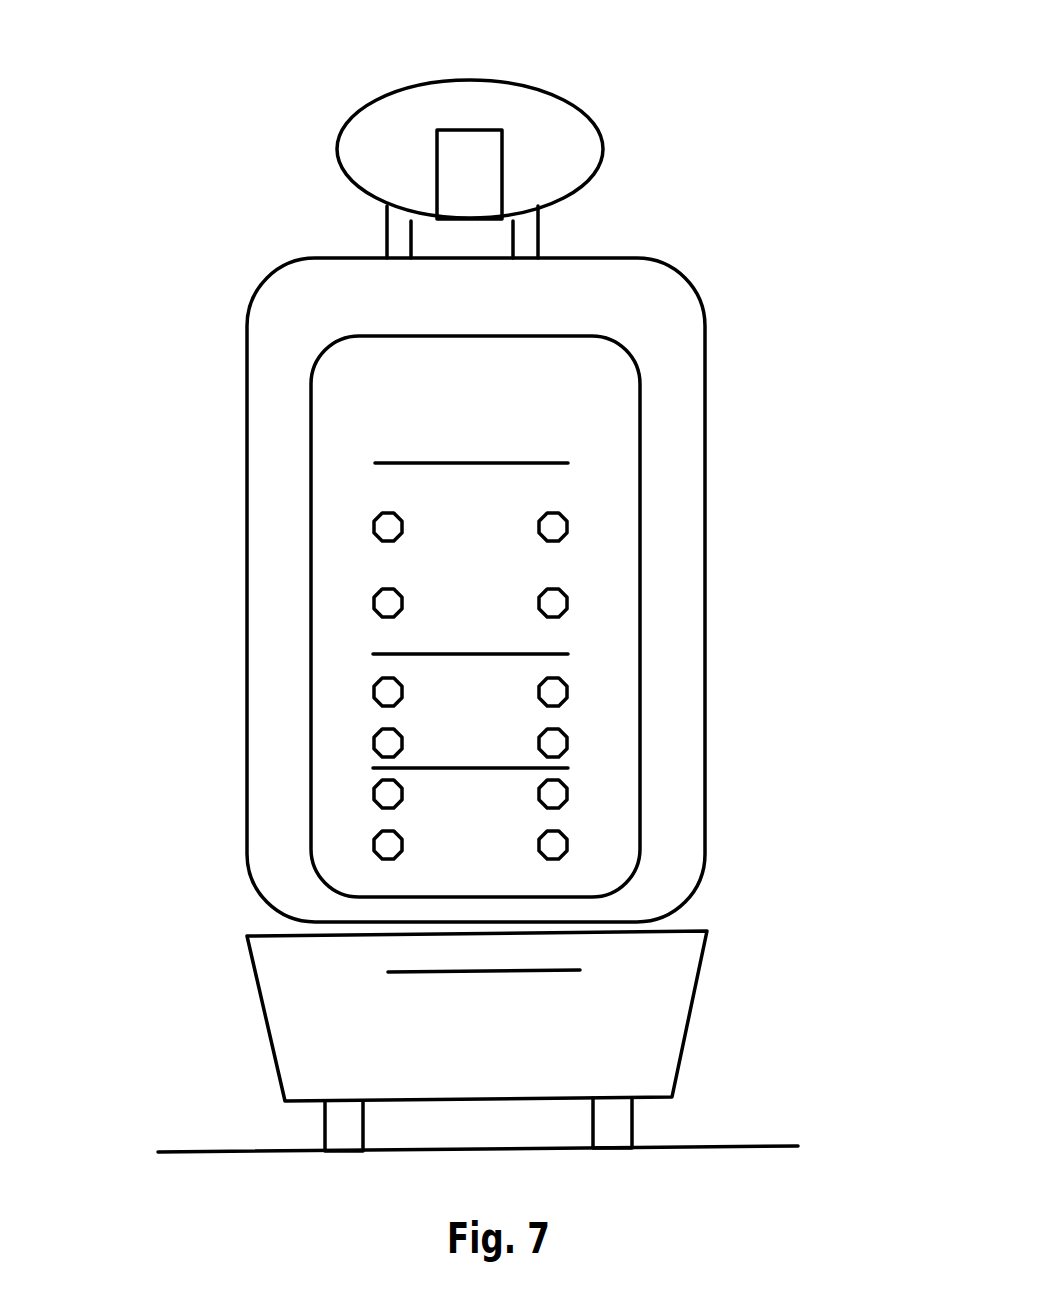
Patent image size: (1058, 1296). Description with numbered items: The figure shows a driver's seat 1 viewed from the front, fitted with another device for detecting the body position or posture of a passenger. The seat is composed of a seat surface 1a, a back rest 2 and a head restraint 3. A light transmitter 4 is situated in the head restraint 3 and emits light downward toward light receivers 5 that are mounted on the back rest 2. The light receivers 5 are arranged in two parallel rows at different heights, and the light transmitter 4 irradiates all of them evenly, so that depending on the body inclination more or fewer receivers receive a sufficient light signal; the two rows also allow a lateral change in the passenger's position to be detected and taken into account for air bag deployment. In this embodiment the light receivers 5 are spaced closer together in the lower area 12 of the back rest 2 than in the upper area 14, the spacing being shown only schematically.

The driver's seat 1 is at (693, 382).
The seat surface 1a is at (692, 928).
The back rest 2 is at (273, 593).
The head restraint 3 is at (372, 157).
The light transmitter 4 is at (465, 154).
The light receivers 5 is at (568, 521).
The lower area 12 is at (616, 779).
The upper area 14 is at (605, 575).